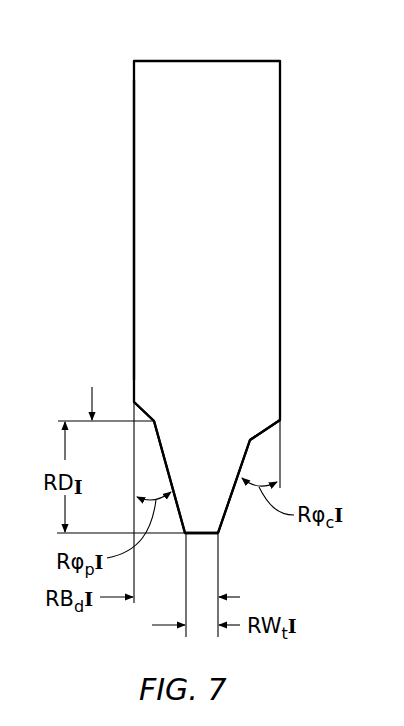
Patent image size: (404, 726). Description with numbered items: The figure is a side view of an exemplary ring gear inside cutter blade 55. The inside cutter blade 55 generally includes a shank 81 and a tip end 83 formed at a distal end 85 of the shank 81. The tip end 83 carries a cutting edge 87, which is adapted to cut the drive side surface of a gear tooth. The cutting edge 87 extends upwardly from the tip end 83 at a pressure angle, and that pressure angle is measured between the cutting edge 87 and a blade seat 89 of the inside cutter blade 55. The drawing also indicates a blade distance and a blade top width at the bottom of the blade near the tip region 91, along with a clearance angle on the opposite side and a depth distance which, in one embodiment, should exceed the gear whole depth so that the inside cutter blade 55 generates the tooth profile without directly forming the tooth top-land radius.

The ring gear inside cutter blade 55 is at (320, 61).
The shank 81 is at (158, 92).
The blade seat 89 is at (131, 191).
The distal end 85 is at (130, 402).
The cutting edge 87 is at (165, 468).
The tip end 83 is at (314, 462).
The bottom / tip of channel 91 is at (224, 536).